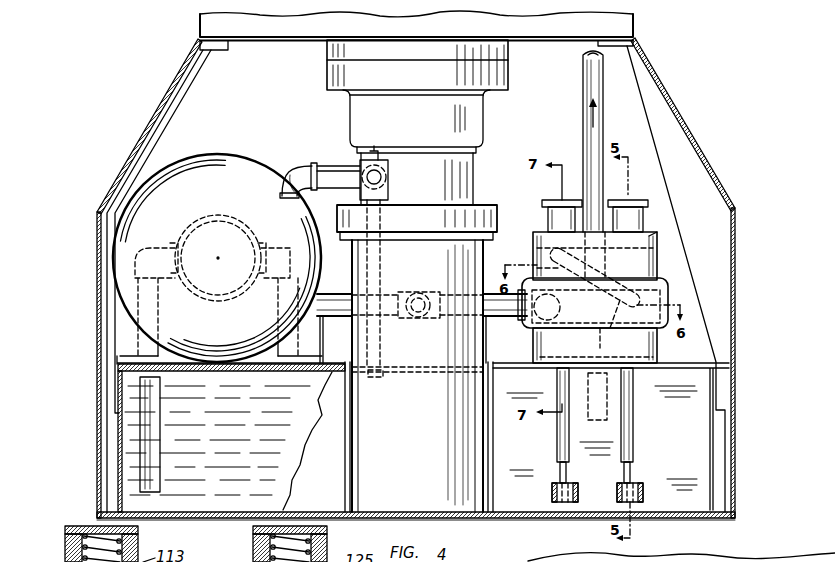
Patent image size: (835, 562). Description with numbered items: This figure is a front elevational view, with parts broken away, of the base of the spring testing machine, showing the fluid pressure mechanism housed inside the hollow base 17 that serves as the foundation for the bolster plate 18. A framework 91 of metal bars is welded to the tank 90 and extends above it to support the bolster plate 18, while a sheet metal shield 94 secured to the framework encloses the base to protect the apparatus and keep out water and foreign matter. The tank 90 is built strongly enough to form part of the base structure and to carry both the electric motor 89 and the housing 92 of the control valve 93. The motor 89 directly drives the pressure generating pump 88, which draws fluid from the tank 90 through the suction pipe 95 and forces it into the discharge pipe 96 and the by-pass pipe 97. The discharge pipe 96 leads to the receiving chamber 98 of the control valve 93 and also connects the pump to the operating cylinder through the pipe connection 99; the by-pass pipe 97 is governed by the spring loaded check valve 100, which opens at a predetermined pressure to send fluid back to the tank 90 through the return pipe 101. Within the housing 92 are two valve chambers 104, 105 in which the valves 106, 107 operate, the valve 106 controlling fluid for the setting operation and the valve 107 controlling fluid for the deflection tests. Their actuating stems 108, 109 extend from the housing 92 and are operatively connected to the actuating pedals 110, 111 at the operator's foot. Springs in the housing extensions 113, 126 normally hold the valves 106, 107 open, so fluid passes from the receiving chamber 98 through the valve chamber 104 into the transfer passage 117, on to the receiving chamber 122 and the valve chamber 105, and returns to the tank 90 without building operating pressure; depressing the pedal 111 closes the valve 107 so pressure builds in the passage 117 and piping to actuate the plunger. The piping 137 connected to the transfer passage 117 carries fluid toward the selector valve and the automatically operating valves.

The hollow base 17 is at (670, 97).
The bolster plate 18 is at (200, 19).
The pressure generating pump 88 is at (224, 216).
The electric motor 89 is at (241, 163).
The tank 90 is at (118, 464).
The framework 91 is at (188, 93).
The housing 92 is at (657, 346).
The control valve 93 is at (657, 263).
The sheet metal shield 94 is at (148, 122).
The suction pipe 95 is at (147, 429).
The discharge pipe 96 is at (335, 296).
The by-pass pipe 97 is at (327, 166).
The receiving chamber 98 is at (527, 337).
The pipe connection 99 is at (425, 291).
The spring loaded check valve 100 is at (390, 173).
The return pipe 101 is at (378, 271).
The valve chamber 104 is at (537, 252).
The valve chamber 105 is at (660, 231).
The valve 106 is at (560, 314).
The valve 107 is at (660, 250).
The actuating stem 108 is at (562, 433).
The actuating stem 109 is at (637, 438).
The actuating pedal 110 is at (552, 498).
The actuating pedal 111 is at (643, 497).
The housing extension 113 is at (546, 212).
The transfer passage 117 is at (598, 332).
The receiving chamber 122 is at (665, 292).
The housing extension 126 is at (631, 207).
The piping 137 is at (593, 81).